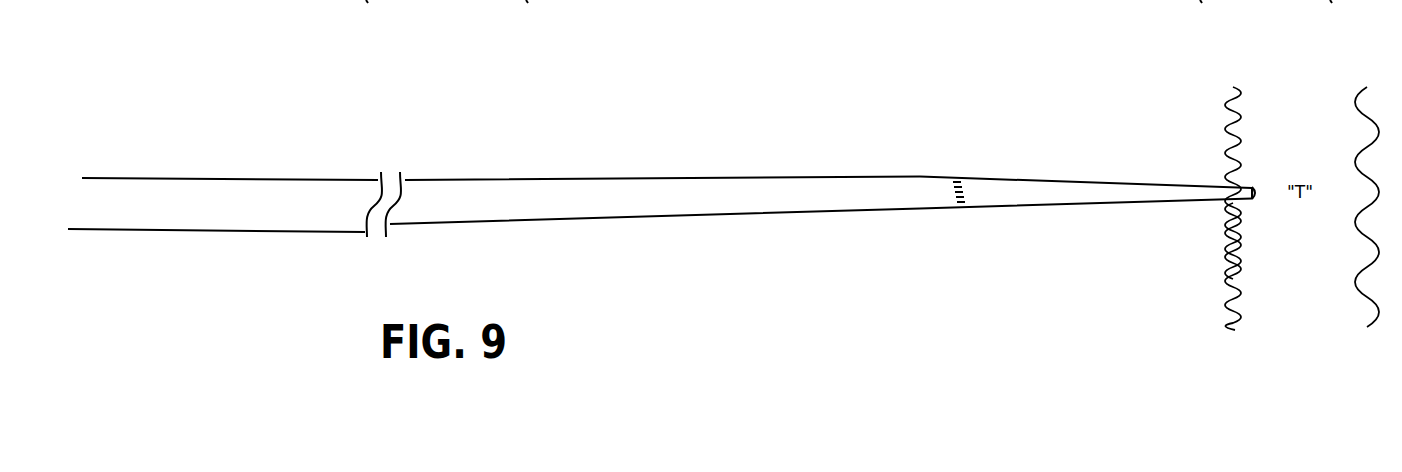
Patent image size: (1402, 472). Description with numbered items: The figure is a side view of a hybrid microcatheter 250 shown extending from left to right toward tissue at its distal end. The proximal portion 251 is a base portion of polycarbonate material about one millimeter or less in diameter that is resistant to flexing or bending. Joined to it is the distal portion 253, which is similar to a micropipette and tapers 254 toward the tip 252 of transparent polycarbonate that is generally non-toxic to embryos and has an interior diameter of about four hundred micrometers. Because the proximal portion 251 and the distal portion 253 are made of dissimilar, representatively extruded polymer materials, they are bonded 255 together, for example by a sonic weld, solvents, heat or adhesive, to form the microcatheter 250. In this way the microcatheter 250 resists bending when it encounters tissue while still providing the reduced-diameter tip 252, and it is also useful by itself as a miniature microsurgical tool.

The microcatheter 250 is at (324, 117).
The proximal portion 251 is at (525, 210).
The tip 252 is at (1254, 176).
The distal portion 253 is at (1098, 206).
The taper 254 is at (1187, 176).
The bond 255 is at (938, 167).